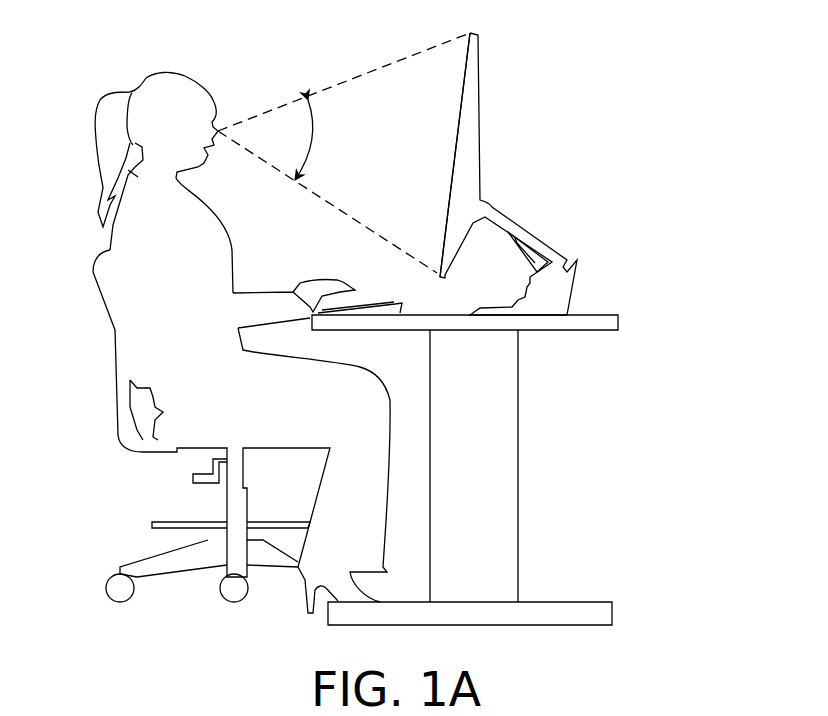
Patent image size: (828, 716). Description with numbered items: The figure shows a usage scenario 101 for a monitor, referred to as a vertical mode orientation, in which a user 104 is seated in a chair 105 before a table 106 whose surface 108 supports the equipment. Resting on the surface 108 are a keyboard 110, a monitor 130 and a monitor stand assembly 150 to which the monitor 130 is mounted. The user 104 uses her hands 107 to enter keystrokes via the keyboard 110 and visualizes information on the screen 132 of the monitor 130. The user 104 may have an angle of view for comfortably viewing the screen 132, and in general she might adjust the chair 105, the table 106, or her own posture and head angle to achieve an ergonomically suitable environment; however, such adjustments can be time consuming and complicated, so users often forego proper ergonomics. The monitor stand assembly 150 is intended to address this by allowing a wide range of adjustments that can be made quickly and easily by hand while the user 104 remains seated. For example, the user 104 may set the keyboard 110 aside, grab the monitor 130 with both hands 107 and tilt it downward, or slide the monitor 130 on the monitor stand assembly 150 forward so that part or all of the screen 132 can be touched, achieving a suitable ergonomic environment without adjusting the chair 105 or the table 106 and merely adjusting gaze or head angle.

The scenario 101 is at (644, 78).
The user 104 is at (146, 78).
The chair 105 is at (118, 418).
The table 106 is at (518, 420).
The hands 107 is at (320, 262).
The surface 108 is at (612, 313).
The keyboard 110 is at (407, 305).
The monitor 130 is at (481, 88).
The screen 132 is at (458, 117).
The monitor stand assembly 150 is at (584, 239).